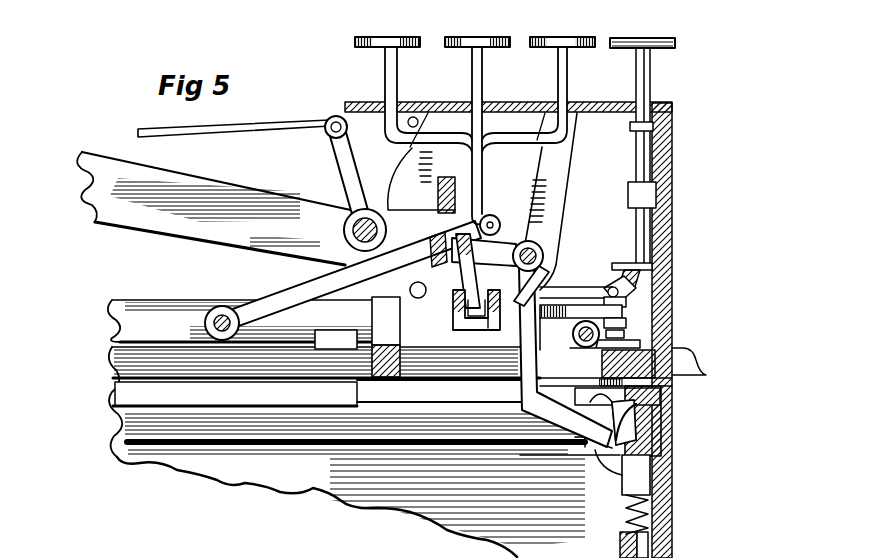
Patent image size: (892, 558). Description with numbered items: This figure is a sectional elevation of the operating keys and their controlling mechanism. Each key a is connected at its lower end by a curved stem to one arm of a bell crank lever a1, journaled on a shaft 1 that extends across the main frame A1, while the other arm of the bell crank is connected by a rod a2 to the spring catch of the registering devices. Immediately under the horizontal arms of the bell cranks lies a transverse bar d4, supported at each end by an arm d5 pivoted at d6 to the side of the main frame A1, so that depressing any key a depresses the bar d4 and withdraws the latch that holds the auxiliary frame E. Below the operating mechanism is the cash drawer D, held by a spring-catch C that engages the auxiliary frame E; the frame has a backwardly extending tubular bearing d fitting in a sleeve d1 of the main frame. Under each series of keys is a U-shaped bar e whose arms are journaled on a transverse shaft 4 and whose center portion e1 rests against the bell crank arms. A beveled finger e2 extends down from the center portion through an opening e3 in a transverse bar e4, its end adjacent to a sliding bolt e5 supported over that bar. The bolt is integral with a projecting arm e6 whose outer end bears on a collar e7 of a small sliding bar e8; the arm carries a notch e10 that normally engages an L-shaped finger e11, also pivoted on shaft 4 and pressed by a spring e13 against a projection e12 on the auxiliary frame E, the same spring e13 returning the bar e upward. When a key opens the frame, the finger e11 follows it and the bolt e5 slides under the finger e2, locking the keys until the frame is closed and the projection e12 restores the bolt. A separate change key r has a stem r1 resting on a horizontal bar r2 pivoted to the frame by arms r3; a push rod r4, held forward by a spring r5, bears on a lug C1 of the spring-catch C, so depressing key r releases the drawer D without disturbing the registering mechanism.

The key a is at (478, 36).
The bell crank lever a1 is at (362, 185).
The rod a2 is at (245, 130).
The shaft 1 is at (357, 227).
The drawer opening key r is at (677, 43).
The stem r1 is at (642, 158).
The horizontal bar r2 is at (655, 277).
The arm r3 is at (622, 296).
The push rod r4 is at (606, 326).
The spring r5 is at (608, 337).
The tubular bearing d is at (356, 430).
The tube or sleeve d1 is at (439, 399).
The transverse bar d4 is at (432, 253).
The arm d5 is at (288, 293).
The pivot d6 is at (224, 316).
The U-shaped bar or frame e is at (512, 242).
The center portion e1 is at (484, 252).
The finger e2 is at (467, 284).
The opening e3 is at (453, 301).
The transverse bar e4 is at (492, 322).
The sliding bolt e5 is at (477, 318).
The projecting arm e6 is at (583, 317).
The collar e7 is at (583, 341).
The sliding bar e8 is at (565, 357).
The notch or engaging shoulder e10 is at (549, 320).
The L-shaped finger e11 is at (530, 388).
The projection e12 is at (605, 445).
The spring e13 is at (537, 240).
The transverse shaft 4 is at (541, 262).
The auxiliary frame E is at (662, 418).
The spring-catch C is at (640, 470).
The projecting lug C1 is at (619, 441).
The drawer D is at (559, 492).
The main frame A1 is at (316, 428).